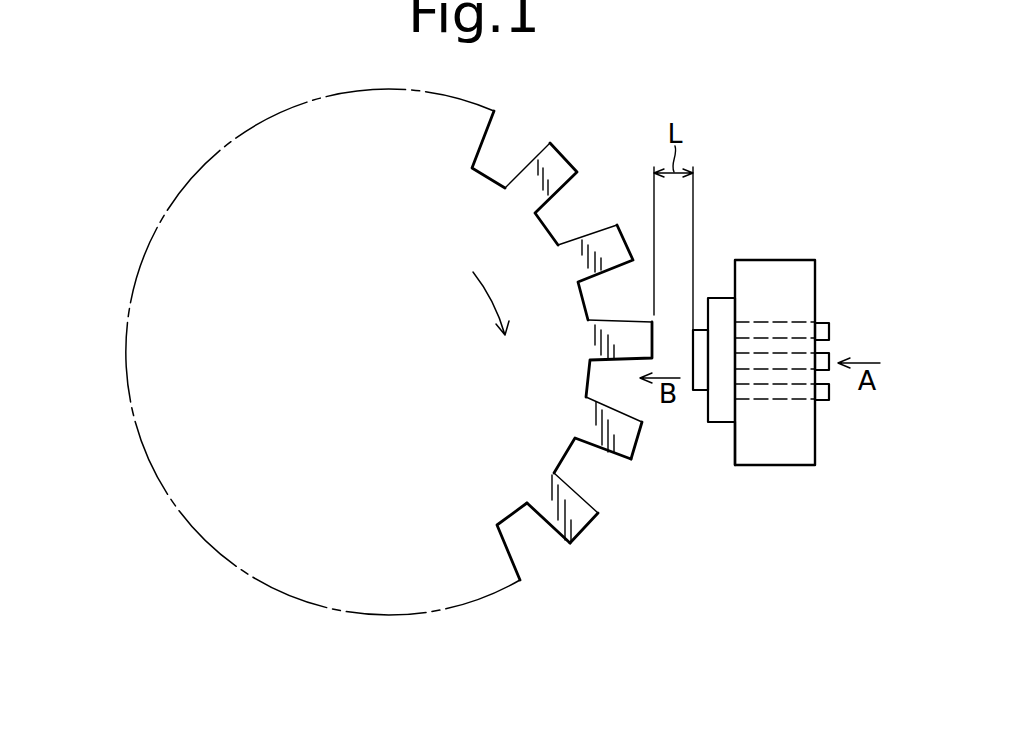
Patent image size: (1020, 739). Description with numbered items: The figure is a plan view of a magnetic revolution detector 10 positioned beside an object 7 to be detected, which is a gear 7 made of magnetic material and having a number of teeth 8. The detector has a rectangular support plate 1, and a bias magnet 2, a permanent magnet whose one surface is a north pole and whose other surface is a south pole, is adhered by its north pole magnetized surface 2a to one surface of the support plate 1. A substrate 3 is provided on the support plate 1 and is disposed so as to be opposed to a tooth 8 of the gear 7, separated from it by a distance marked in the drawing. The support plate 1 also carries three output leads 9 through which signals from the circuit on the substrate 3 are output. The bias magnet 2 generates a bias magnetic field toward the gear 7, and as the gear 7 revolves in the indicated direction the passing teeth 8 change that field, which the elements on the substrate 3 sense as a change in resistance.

The magnetic detector 10 is at (622, 85).
The object to be detected 7 is at (512, 517).
The teeth 8 is at (632, 458).
The support plate 1 is at (721, 297).
The bias magnet 2 is at (778, 260).
The magnetized surface 2a is at (734, 432).
The substrate 3 is at (695, 391).
The output leads 9 is at (829, 353).